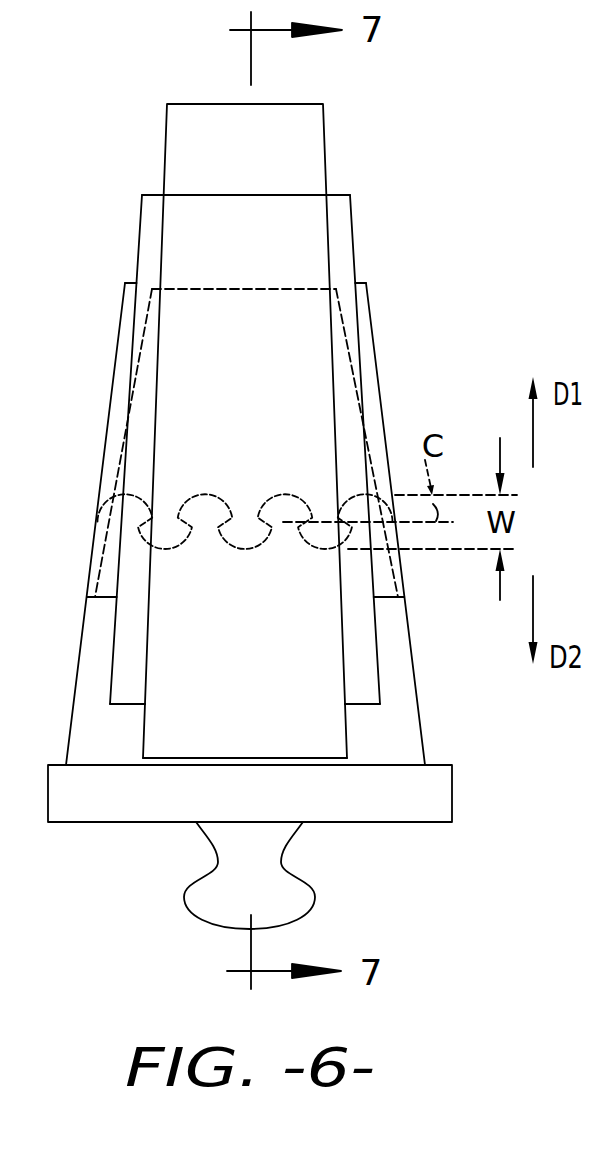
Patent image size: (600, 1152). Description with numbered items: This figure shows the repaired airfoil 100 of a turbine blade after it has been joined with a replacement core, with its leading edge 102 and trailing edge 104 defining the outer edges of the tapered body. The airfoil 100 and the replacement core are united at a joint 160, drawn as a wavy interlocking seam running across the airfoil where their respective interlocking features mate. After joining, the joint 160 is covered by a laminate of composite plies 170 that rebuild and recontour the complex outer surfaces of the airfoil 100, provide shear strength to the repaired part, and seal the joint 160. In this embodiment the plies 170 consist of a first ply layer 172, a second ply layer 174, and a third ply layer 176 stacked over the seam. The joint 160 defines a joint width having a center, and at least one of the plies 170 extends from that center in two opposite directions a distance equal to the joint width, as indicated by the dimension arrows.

The airfoil 100 is at (244, 606).
The leading edge 102 is at (88, 639).
The trailing edge 104 is at (412, 667).
The joint 160 is at (103, 550).
The plies 170 is at (259, 476).
The first ply layer 172 is at (359, 343).
The second ply layer 174 is at (152, 415).
The third ply layer 176 is at (327, 722).